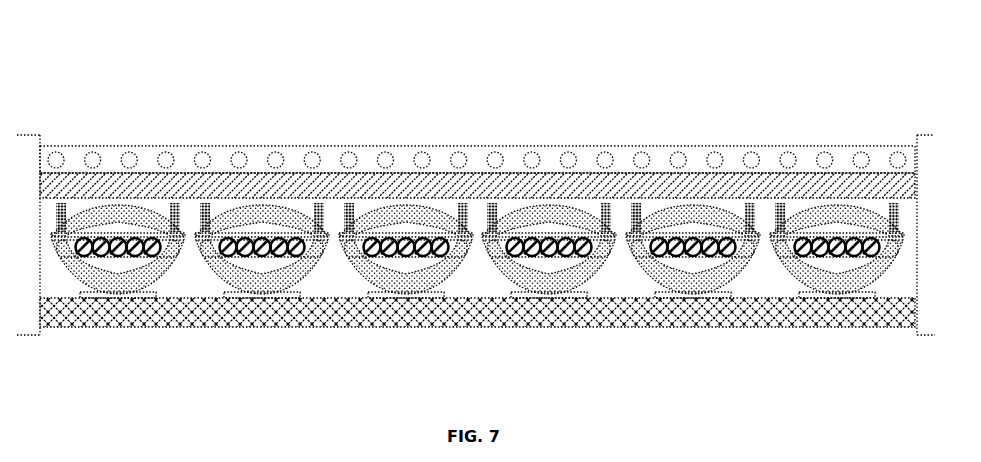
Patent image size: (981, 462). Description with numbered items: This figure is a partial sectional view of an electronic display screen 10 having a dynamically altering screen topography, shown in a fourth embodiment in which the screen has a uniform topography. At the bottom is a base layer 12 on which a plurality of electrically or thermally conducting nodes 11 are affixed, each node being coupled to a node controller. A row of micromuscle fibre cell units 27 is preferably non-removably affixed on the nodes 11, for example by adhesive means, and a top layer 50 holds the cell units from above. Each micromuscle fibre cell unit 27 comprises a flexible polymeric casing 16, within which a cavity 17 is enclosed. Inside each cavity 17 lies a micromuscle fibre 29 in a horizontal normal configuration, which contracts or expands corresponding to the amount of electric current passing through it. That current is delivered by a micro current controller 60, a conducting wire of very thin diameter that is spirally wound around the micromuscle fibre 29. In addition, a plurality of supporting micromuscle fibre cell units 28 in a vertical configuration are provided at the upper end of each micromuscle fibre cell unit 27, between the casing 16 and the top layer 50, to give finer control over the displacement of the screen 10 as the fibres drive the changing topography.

The electronic display screen 10 is at (574, 123).
The top layer 50 is at (191, 183).
The supporting micromuscle fibre cell units 28 is at (320, 201).
The micromuscle fibre cell unit 27 is at (162, 270).
The flexible polymeric casing 16 is at (584, 270).
The cavity 17 is at (836, 264).
The micromuscle fibre 29 is at (285, 252).
The micro current controller 60 is at (430, 252).
The electrically or thermally conducting nodes 11 is at (713, 299).
The base layer 12 is at (663, 319).